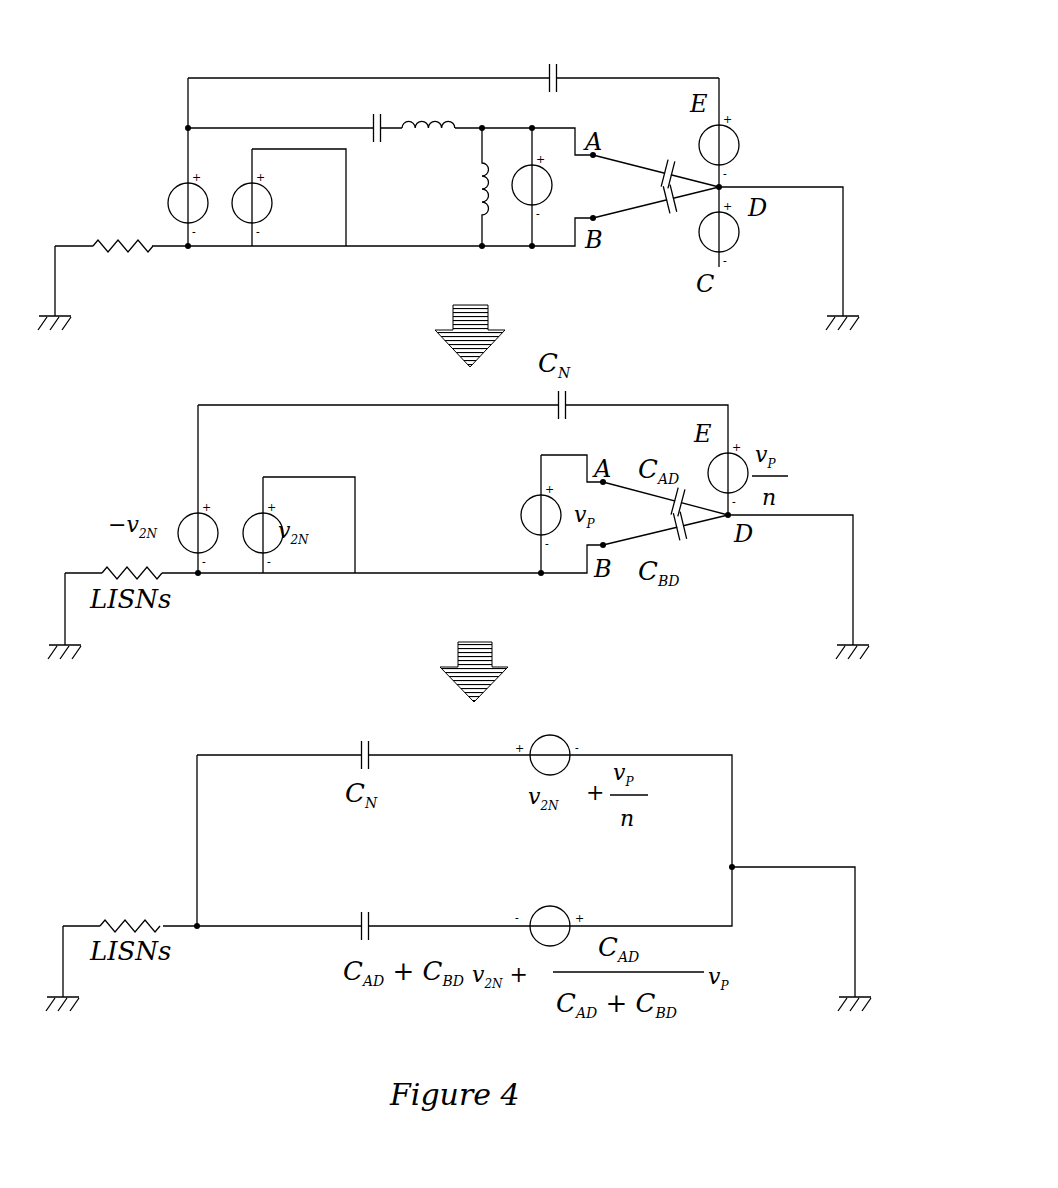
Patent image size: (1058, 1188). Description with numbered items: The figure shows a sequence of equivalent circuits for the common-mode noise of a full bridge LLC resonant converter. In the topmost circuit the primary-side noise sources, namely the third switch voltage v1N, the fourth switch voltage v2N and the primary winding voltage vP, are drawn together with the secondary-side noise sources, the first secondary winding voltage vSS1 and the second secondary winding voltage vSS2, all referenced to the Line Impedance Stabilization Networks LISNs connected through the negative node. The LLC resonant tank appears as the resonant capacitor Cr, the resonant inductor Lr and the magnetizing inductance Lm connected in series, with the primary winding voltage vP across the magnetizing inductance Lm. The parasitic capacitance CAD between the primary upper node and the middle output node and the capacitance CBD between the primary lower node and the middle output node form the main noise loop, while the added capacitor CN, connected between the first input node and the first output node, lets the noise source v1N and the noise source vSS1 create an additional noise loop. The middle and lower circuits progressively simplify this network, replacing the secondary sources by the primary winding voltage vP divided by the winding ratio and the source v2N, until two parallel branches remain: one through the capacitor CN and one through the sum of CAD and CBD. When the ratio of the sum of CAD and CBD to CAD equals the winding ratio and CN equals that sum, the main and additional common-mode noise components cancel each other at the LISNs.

The capacitor CN is at (453, 56).
The resonant capacitor Cr is at (376, 152).
The resonant inductor Lr is at (428, 146).
The magnetizing inductance Lm is at (465, 187).
The capacitance between primary upper node and middle output node CAD is at (656, 156).
The capacitance between primary lower node and middle output node CBD is at (656, 220).
The primary winding voltage vP is at (548, 187).
The third switch voltage v1N is at (161, 205).
The fourth switch voltage v2N is at (264, 205).
The first secondary winding voltage vSS1 is at (740, 147).
The second secondary winding voltage vSS2 is at (740, 234).
The Line Impedance Stabilization Networks LISNs is at (315, 274).